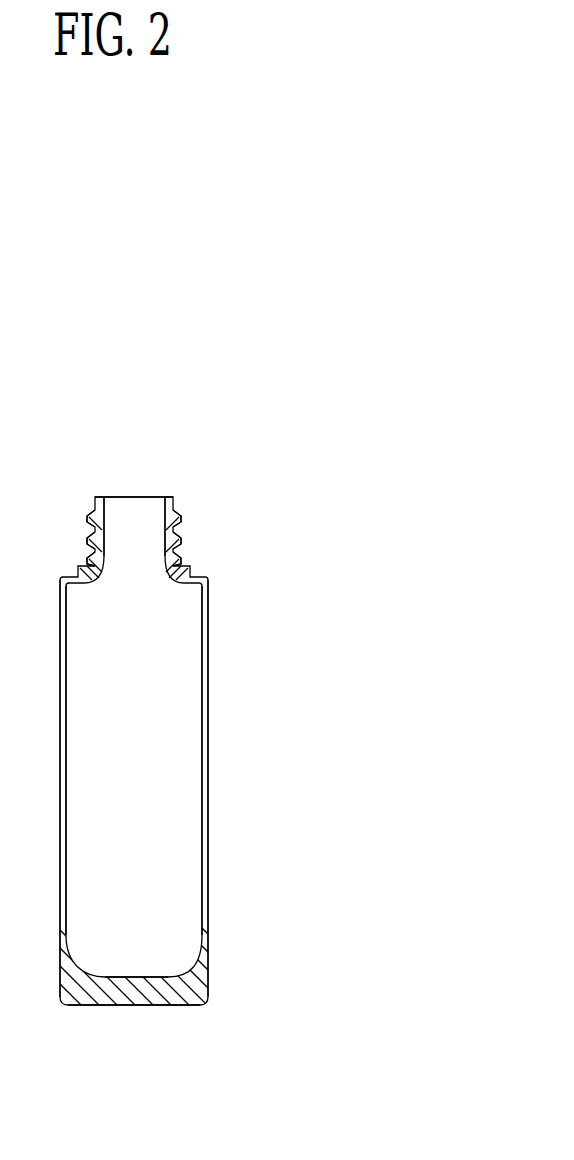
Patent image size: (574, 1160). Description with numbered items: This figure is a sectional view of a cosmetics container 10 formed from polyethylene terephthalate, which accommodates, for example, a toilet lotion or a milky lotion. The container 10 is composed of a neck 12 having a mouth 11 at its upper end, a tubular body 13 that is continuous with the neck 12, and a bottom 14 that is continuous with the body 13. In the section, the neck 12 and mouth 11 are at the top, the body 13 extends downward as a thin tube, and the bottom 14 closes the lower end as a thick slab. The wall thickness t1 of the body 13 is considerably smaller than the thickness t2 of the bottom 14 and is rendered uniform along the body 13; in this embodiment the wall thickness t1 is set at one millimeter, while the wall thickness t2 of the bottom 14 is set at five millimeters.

The container 10 is at (350, 517).
The mouth 11 is at (128, 507).
The neck 12 is at (170, 541).
The tubular body 13 is at (206, 717).
The bottom 14 is at (173, 1003).
The wall thickness of the body t1 is at (173, 830).
The wall thickness of the bottom t2 is at (115, 932).